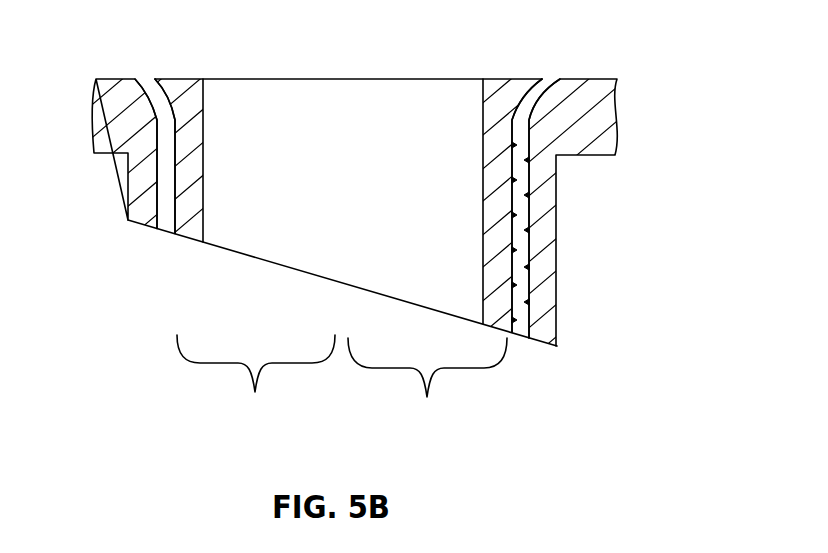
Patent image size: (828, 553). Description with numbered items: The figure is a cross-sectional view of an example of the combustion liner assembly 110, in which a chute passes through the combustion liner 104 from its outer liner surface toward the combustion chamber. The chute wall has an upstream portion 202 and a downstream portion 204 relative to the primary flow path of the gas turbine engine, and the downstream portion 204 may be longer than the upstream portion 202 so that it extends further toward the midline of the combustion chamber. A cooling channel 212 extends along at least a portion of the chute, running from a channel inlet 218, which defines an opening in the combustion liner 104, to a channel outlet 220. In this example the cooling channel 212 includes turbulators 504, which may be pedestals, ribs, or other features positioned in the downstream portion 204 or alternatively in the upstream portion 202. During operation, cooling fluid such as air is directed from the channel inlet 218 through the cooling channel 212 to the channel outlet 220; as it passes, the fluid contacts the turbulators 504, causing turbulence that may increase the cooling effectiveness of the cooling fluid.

The combustion liner 104 is at (122, 88).
The combustion liner assembly 110 is at (147, 288).
The cooling channel 212 is at (152, 93).
The channel inlet 218 is at (562, 67).
The turbulators 504 is at (529, 265).
The channel outlet 220 is at (530, 342).
The upstream portion 202 is at (256, 384).
The downstream portion 204 is at (427, 386).